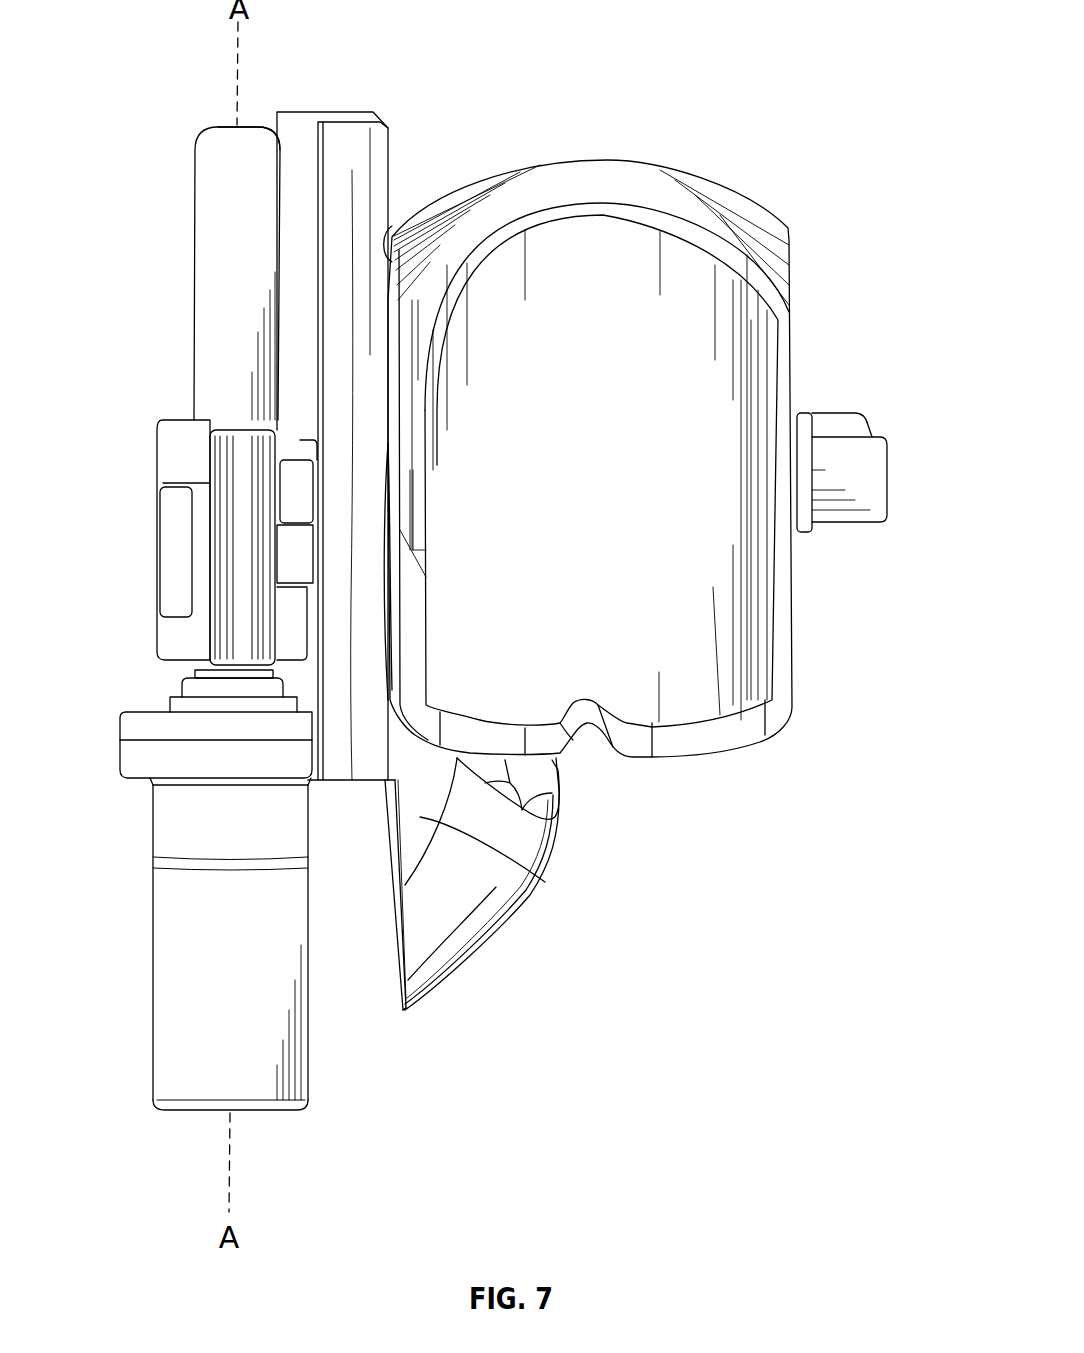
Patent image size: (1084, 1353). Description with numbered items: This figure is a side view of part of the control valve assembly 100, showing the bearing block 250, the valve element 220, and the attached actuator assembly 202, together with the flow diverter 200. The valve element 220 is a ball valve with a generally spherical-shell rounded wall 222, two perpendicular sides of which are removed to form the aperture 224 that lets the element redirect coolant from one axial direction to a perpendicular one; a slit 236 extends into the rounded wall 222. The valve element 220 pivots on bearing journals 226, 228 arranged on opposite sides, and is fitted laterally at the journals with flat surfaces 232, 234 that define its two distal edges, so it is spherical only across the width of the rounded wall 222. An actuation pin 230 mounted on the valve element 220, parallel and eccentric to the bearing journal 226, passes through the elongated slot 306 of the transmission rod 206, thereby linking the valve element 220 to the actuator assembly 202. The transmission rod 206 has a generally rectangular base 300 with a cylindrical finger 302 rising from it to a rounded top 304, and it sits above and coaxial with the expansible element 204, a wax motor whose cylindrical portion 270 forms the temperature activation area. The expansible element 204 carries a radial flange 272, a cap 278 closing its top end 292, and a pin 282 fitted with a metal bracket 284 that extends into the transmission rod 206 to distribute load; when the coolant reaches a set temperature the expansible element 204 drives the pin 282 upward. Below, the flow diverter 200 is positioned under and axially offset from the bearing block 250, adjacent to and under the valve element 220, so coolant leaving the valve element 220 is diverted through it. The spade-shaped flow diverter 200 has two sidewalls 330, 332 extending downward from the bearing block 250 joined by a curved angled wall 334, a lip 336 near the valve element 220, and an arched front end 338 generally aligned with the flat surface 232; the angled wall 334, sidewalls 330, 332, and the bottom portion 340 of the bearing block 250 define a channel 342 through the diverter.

The control valve assembly 100 is at (862, 124).
The flow diverter 200 is at (440, 943).
The actuator assembly 202 is at (220, 260).
The expansible element 204 is at (165, 1085).
The transmission rod 206 is at (178, 453).
The valve element 220 is at (793, 265).
The rounded wall 222 is at (580, 504).
The aperture 224 is at (698, 582).
The bearing journal 226 is at (307, 450).
The bearing journal 228 is at (865, 480).
The actuation pin 230 is at (292, 542).
The flat surface 232 is at (392, 236).
The flat surface 234 is at (800, 345).
The slit 236 is at (622, 742).
The bearing block 250 is at (345, 130).
The cylindrical portion 270 is at (180, 910).
The radial flange 272 is at (163, 762).
The cap 278 is at (153, 714).
The pin 282 is at (190, 680).
The bracket 284 is at (197, 672).
The top end 292 is at (172, 702).
The base 300 is at (167, 500).
The finger 302 is at (218, 190).
The rounded top 304 is at (232, 127).
The elongated slot 306 is at (153, 547).
The sidewall 330 is at (353, 962).
The sidewall 332 is at (545, 882).
The angled wall 334 is at (480, 900).
The lip 336 is at (567, 803).
The front end 338 is at (400, 992).
The bottom portion 340 is at (352, 783).
The channel 342 is at (398, 960).